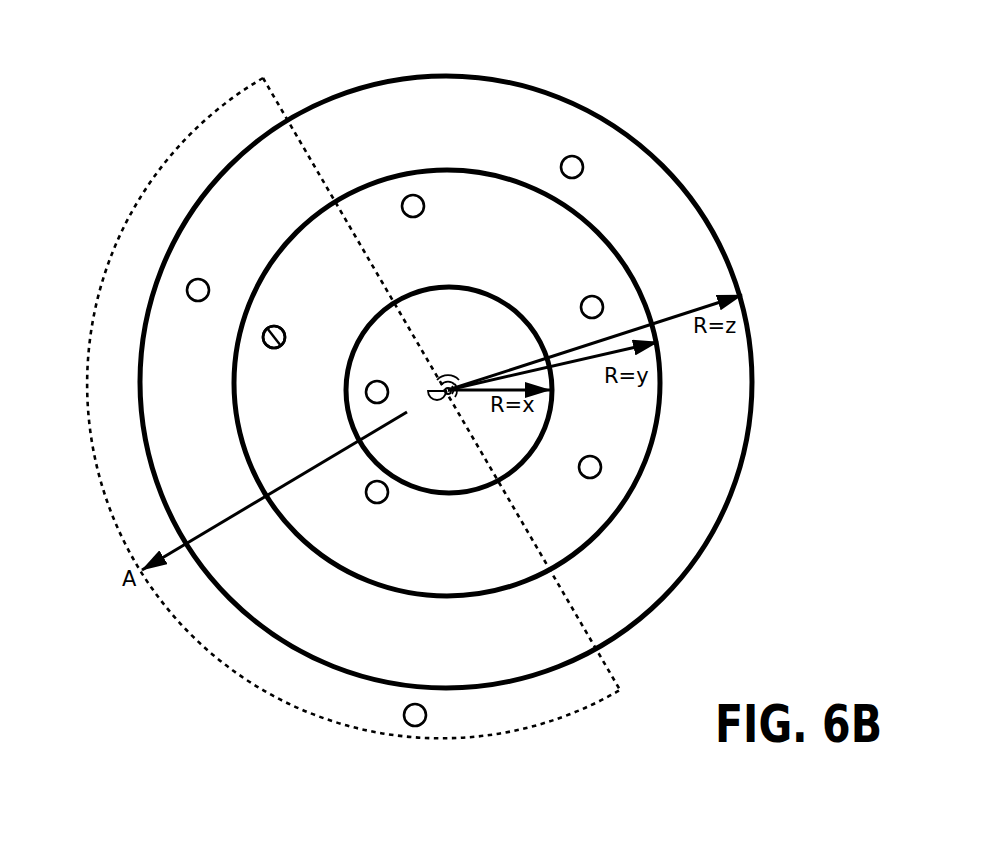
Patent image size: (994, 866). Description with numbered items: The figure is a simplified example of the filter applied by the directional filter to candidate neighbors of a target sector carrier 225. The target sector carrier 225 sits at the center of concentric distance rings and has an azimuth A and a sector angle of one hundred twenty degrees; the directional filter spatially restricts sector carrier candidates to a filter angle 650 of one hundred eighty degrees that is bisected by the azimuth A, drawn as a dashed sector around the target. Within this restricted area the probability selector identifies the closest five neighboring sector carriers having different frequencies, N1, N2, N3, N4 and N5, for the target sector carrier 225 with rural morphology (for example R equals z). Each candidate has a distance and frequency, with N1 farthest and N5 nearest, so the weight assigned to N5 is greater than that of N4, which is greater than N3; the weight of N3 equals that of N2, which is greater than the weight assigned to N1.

The filter angle 650 is at (133, 218).
The target sector carrier 225 is at (443, 402).
The neighboring sector carrier N1 is at (204, 275).
The neighboring sector carrier N2 is at (265, 351).
The neighboring sector carrier N3 is at (286, 320).
The neighboring sector carrier N4 is at (361, 499).
The neighboring sector carrier N5 is at (376, 380).